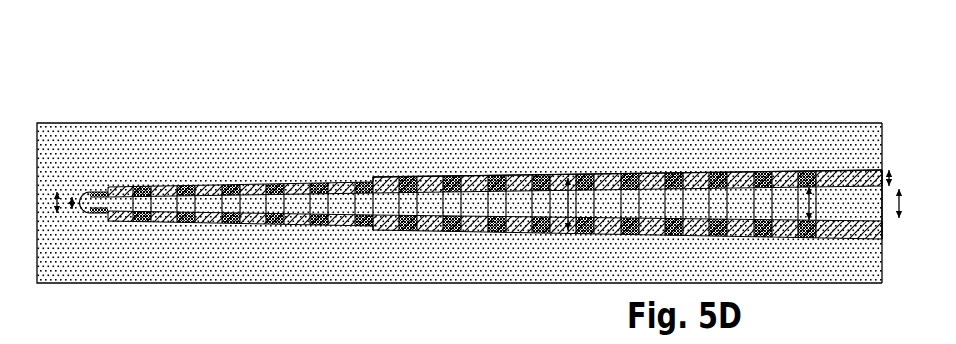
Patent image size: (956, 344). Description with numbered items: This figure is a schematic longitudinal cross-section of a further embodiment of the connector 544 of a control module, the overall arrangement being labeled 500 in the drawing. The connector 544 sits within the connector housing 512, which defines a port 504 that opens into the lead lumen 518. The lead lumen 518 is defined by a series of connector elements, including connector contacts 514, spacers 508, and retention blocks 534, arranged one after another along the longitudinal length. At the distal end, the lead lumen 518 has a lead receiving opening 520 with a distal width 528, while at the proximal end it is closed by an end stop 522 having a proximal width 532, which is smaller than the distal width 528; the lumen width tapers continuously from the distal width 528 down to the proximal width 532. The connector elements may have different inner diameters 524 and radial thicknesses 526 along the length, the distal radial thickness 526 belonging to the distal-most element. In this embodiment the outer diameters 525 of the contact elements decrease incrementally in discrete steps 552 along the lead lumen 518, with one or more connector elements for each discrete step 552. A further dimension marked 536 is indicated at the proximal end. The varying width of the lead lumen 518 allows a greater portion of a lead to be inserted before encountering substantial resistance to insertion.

The medical device assembly 500 is at (480, 177).
The port 504 is at (884, 230).
The spacers 508 is at (501, 190).
The connector housing 512 is at (251, 140).
The connector contacts 514 is at (672, 178).
The lead lumen 518 is at (468, 186).
The lead receiving opening 520 is at (877, 247).
The end stop 522 is at (62, 264).
The inner diameters 524 is at (812, 238).
The outer diameter 525 is at (571, 233).
The radial thickness 526 is at (890, 168).
The distal width 528 is at (901, 221).
The proximal width 532 is at (73, 194).
The retention blocks 534 is at (803, 175).
The proximal outer diameter 536 is at (56, 189).
The connector 544 is at (478, 160).
The discrete steps 552 is at (366, 259).